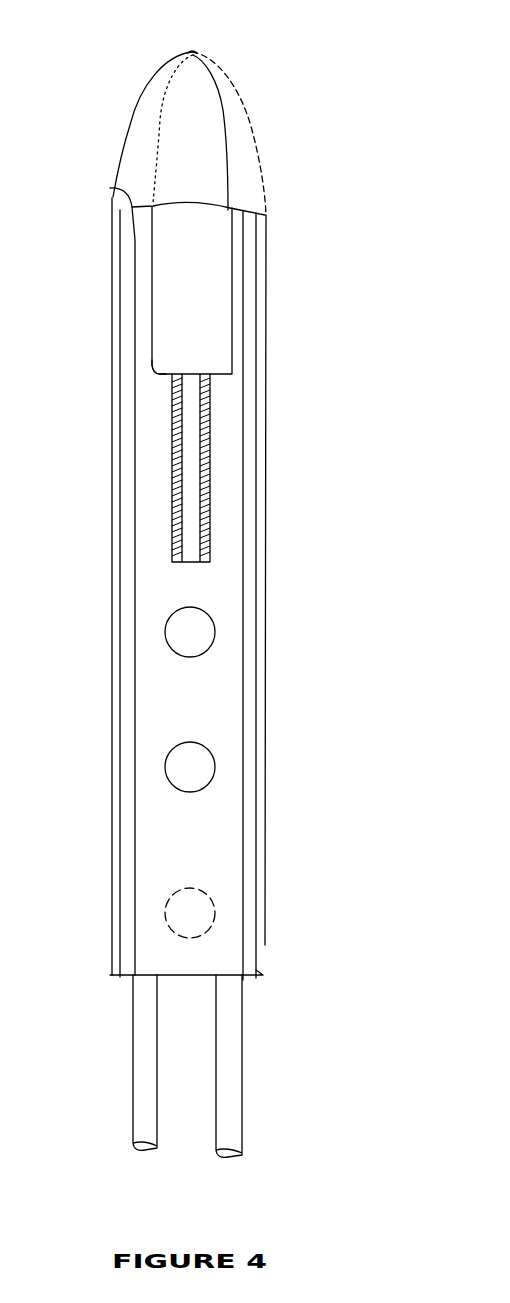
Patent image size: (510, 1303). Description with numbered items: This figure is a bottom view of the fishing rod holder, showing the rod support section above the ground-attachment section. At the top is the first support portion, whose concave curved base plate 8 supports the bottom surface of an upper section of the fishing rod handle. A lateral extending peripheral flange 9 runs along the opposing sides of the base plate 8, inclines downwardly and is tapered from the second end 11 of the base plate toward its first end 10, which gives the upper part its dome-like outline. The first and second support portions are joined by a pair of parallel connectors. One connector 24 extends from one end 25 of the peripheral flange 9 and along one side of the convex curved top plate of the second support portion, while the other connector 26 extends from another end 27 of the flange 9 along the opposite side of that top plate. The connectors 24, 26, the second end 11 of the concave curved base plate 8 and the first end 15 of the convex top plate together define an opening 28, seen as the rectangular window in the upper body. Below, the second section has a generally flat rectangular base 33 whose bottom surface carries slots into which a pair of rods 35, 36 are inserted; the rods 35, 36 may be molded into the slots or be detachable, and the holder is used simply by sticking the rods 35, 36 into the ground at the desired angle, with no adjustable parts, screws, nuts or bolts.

The concave curved base plate 8 is at (200, 93).
The lateral extending peripheral flange 9 is at (243, 147).
The first end 10 is at (193, 55).
The second end 11 is at (198, 200).
The first end 15 is at (152, 366).
The connector 24 is at (248, 258).
The end 25 is at (237, 207).
The connector 26 is at (130, 275).
The end 27 is at (110, 188).
The opening 28 is at (207, 293).
The base 33 is at (218, 795).
The rod 35 is at (227, 1034).
The rod 36 is at (133, 1039).